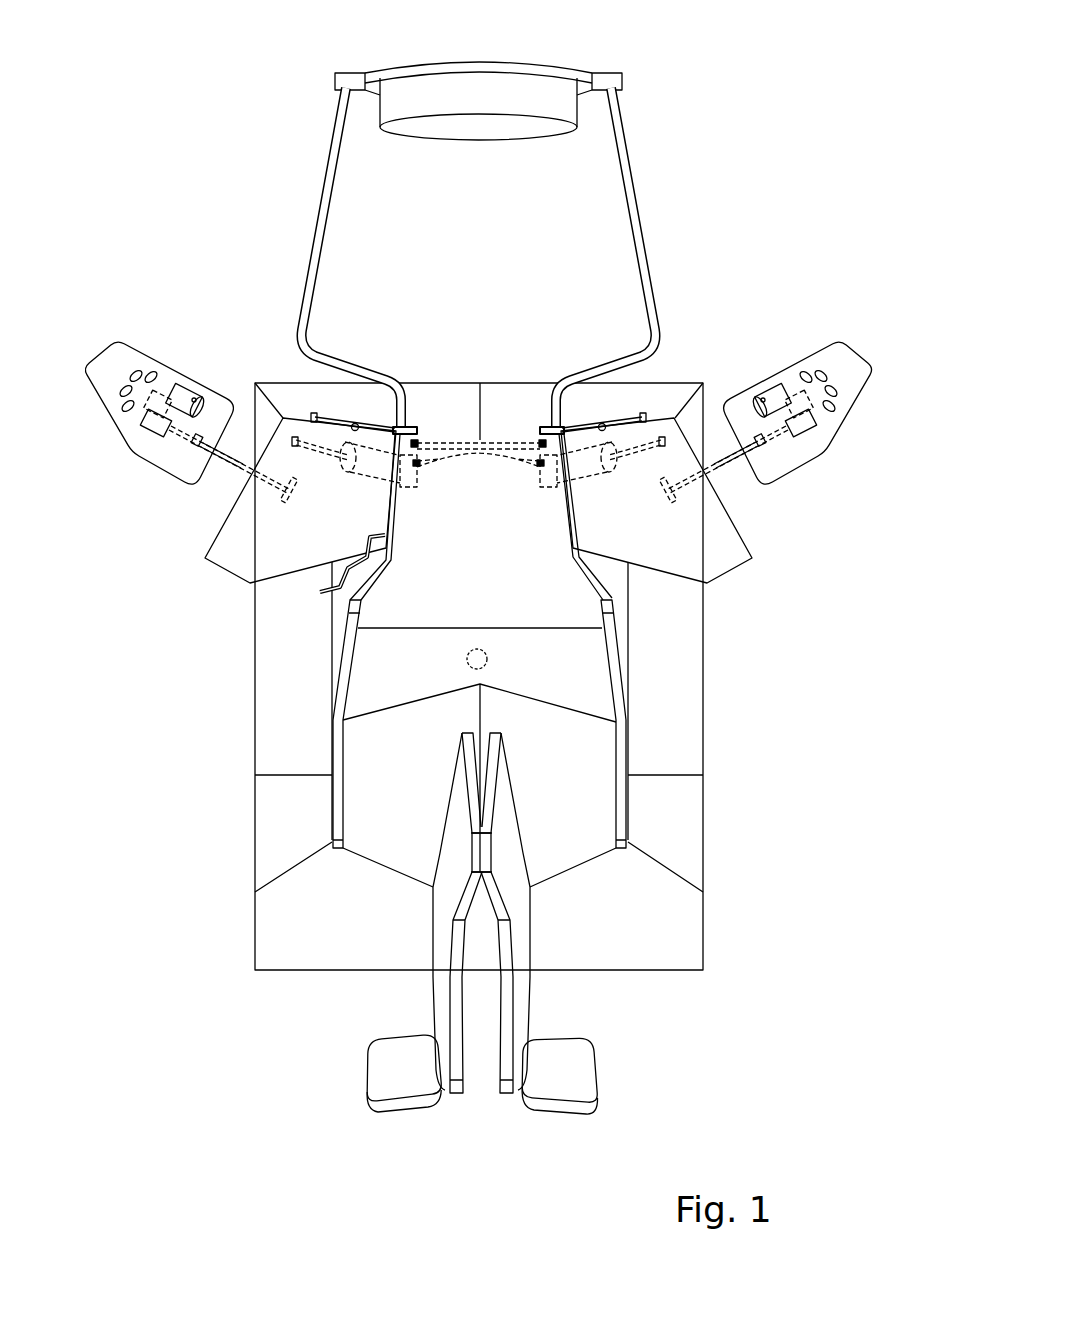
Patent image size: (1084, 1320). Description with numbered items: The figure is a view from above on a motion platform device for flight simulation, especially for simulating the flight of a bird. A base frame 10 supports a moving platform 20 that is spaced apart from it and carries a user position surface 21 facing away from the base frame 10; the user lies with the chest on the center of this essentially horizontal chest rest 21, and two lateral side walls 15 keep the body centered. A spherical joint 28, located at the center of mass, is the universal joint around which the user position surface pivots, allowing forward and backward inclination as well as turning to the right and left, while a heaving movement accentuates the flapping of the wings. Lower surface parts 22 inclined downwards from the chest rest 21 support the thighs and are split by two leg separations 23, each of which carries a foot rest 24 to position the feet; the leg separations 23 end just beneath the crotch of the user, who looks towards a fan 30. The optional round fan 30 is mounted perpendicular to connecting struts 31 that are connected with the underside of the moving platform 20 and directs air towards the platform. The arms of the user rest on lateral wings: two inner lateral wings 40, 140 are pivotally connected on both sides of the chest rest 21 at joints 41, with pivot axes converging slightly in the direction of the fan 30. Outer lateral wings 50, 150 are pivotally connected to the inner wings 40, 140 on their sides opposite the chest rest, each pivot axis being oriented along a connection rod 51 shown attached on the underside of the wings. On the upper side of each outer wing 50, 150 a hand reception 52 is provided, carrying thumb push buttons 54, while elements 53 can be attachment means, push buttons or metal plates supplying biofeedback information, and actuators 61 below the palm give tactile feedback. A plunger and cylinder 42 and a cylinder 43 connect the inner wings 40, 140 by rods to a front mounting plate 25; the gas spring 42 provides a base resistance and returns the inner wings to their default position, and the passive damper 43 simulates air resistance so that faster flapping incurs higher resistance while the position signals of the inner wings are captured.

The base frame 10 is at (287, 925).
The lateral side walls 15 is at (343, 668).
The moving platform 20 is at (587, 580).
The user position surface 21 is at (428, 588).
The lower surface parts 22 is at (378, 808).
The leg separations 23 is at (437, 987).
The foot rest 24 is at (403, 1093).
The front mounting plate 25 is at (442, 462).
The spherical joint 28 is at (470, 659).
The fan 30 is at (537, 100).
The connecting struts 31 is at (313, 213).
The inner lateral wing 40 is at (230, 558).
The inner lateral wing 140 is at (727, 533).
The joints 41 is at (332, 593).
The plunger and cylinder 42 is at (318, 443).
The cylinder 43 is at (372, 422).
The outer lateral wing 50 is at (182, 467).
The outer lateral wing 150 is at (787, 462).
The connection rod 51 is at (243, 463).
The hand reception 52 is at (153, 432).
The elements 53 is at (152, 378).
The thumb push buttons 54 is at (197, 400).
The actuators 61 is at (160, 397).